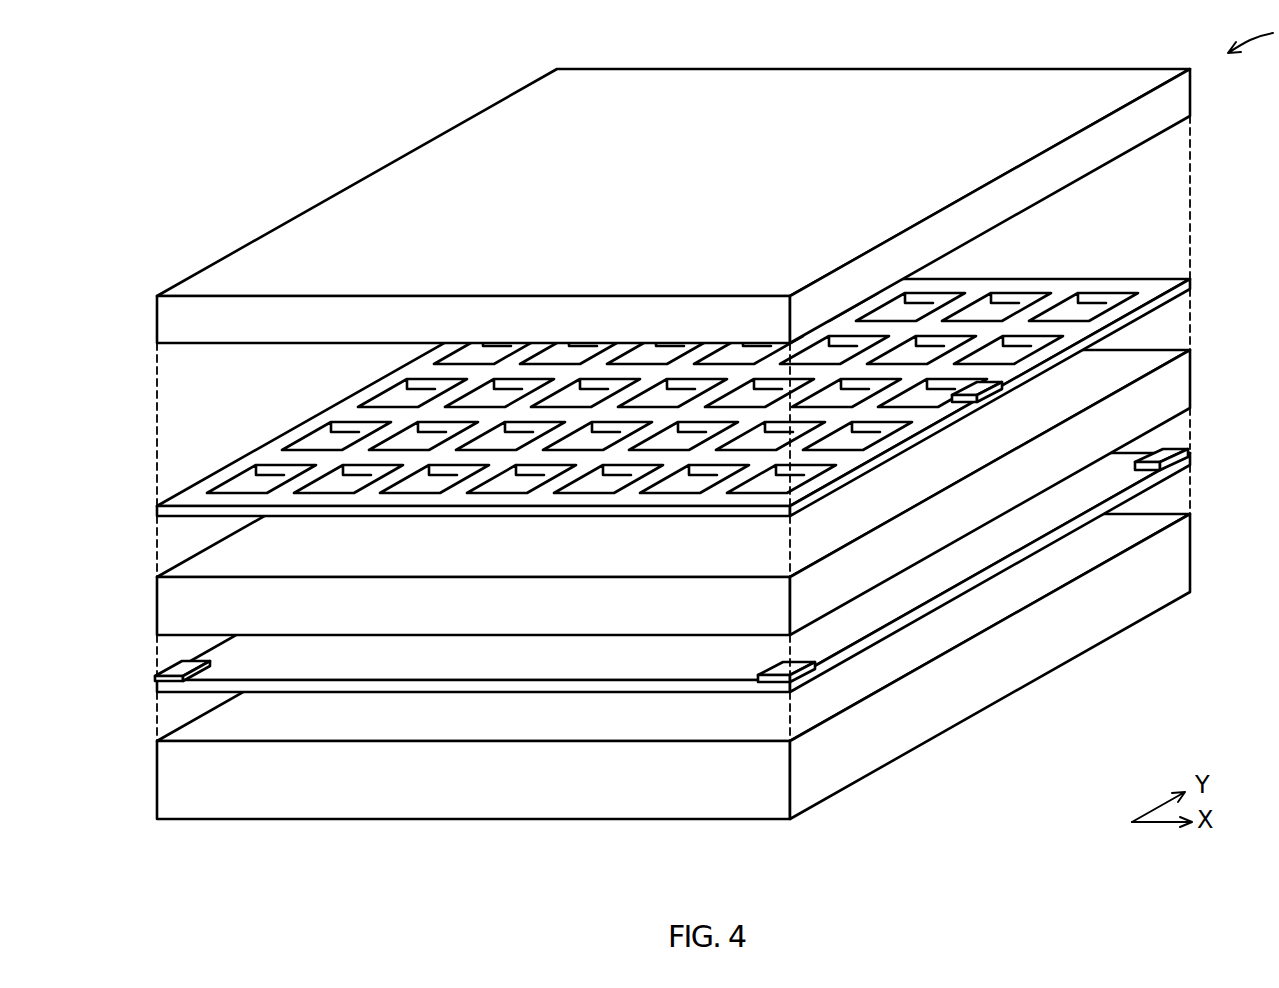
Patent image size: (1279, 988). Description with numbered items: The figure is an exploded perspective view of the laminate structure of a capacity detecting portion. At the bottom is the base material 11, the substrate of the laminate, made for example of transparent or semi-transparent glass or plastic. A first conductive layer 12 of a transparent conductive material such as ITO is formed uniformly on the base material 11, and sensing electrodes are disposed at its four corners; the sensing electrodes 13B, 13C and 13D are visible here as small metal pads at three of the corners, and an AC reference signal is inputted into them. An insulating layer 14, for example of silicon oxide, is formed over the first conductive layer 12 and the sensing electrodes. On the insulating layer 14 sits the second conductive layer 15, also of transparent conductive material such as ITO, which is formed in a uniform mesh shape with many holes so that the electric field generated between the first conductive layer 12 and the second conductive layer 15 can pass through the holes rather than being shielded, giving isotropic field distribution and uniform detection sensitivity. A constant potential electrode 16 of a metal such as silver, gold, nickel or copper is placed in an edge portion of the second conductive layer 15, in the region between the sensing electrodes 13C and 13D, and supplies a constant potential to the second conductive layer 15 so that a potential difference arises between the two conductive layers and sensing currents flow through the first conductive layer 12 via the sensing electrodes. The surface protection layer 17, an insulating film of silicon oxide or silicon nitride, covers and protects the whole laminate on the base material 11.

The base material 11 is at (1125, 597).
The first conductive layer 12 is at (1092, 482).
The sensing electrode 13B is at (180, 668).
The sensing electrode 13C is at (783, 673).
The sensing electrode 13D is at (1160, 453).
The insulating layer 14 is at (1130, 370).
The second conductive layer 15 is at (1135, 300).
The constant potential electrode 16 is at (980, 387).
The surface protection layer 17 is at (1123, 90).